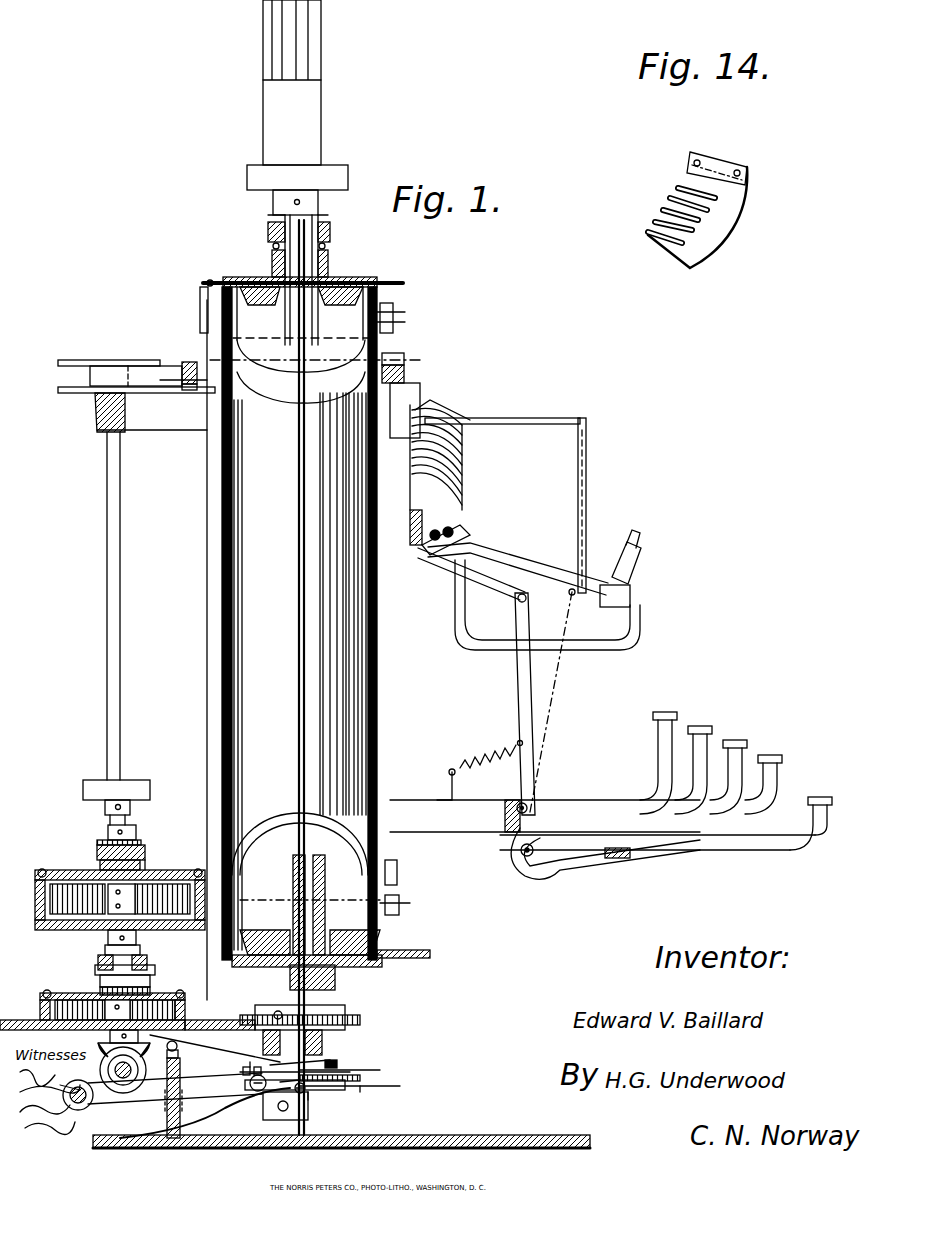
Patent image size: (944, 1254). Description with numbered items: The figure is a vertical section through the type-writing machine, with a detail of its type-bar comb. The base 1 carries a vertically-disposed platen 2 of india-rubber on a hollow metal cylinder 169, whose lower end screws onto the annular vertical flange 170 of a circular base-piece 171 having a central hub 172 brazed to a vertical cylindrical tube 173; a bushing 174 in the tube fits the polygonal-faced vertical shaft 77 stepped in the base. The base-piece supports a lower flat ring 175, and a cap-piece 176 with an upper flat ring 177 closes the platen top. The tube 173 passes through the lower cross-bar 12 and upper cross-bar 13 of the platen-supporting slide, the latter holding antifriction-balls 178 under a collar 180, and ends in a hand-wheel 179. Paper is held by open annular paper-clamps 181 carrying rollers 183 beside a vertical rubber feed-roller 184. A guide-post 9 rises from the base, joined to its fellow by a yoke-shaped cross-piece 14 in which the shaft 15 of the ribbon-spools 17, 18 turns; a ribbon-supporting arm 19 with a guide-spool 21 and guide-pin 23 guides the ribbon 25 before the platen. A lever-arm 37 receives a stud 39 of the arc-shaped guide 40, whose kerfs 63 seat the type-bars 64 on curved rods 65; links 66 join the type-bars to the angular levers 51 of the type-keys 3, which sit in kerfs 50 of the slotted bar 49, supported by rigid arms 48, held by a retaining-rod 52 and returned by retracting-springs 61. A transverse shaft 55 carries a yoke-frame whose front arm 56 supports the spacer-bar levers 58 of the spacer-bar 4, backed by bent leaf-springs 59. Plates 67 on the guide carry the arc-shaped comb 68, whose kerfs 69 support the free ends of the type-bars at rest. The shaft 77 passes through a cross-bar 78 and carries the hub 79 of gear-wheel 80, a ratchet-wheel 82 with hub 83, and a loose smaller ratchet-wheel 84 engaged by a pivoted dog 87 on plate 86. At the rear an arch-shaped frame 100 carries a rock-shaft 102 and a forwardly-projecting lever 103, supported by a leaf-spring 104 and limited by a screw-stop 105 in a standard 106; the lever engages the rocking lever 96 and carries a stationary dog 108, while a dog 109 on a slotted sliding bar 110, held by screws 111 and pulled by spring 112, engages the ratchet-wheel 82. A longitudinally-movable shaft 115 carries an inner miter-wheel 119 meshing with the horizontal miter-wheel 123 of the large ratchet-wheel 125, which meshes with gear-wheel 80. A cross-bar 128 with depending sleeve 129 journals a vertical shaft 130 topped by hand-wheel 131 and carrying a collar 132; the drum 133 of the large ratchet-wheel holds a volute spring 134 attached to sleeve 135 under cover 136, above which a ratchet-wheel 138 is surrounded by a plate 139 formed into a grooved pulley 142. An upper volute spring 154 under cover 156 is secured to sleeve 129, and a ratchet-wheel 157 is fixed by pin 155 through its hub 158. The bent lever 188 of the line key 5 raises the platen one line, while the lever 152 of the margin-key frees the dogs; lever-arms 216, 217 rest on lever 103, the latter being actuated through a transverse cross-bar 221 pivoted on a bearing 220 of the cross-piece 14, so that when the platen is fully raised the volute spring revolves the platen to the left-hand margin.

In FIG. 1, the base 1 is at (435, 1135).
In FIG. 1, the platen 2 is at (299, 623).
In FIG. 1, the type-keys 3 is at (678, 708).
In FIG. 1, the spacer-bar 4 is at (820, 797).
In FIG. 1, the platen-raising or line key 5 is at (630, 583).
In FIG. 1, the guide-post 9 is at (321, 40).
In FIG. 1, the lower cross-bar 12 is at (335, 978).
In FIG. 1, the upper cross-bar 13 is at (270, 260).
In FIG. 1, the yoke-shaped cross-piece 14 is at (136, 405).
In FIG. 1, the ribbon-spool shaft 15 is at (120, 572).
In FIG. 1, the ribbon-spool 17 is at (75, 360).
In FIG. 1, the ribbon-spool 18 is at (82, 1095).
In FIG. 1, the ribbon-supporting arm 19 is at (420, 390).
In FIG. 1, the guide-spool 21 is at (408, 340).
In FIG. 1, the guide-pin 23 is at (405, 360).
In FIG. 1, the ribbon 25 is at (165, 368).
In FIG. 1, the lever-arm 37 is at (396, 518).
In FIG. 1, the stud 39 is at (368, 447).
In FIG. 1, the arc-shaped guide 40 is at (440, 412).
In FIG. 1, the rigid arm 48 is at (545, 816).
In FIG. 1, the slotted bar 49 is at (505, 798).
In FIG. 1, the transverse kerfs 50 is at (445, 775).
In FIG. 1, the angular levers 51 is at (530, 712).
In FIG. 1, the retaining-rod 52 is at (527, 803).
In FIG. 1, the transverse shaft 55 is at (527, 856).
In FIG. 1, the front transverse arm 56 is at (630, 855).
In FIG. 1, the spacer-bar levers 58 is at (735, 842).
In FIG. 1, the bent leaf-springs 59 is at (505, 868).
In FIG. 1, the retracting-springs 61 is at (485, 750).
In FIG. 1, the transverse kerfs 63 is at (465, 468).
In FIG. 1, the type-bars 64 is at (555, 570).
In FIG. 1, the curved rods 65 is at (455, 530).
In FIG. 1, the links 66 is at (485, 580).
In FIG. 1, the forwardly-projecting plates 67 is at (545, 418).
In FIG. 14, the forwardly-projecting plates 67 is at (737, 160).
In FIG. 1, the arc-shaped comb 68 is at (586, 468).
In FIG. 14, the arc-shaped comb 68 is at (718, 215).
In FIG. 14, the kerfs 69 is at (672, 196).
In FIG. 1, the vertical shaft 77 is at (305, 258).
In FIG. 1, the cross-bar 78 is at (275, 1010).
In FIG. 1, the hub 79 is at (330, 1012).
In FIG. 1, the gear-wheel 80 is at (360, 1015).
In FIG. 1, the ratchet-wheel 82 is at (385, 1092).
In FIG. 1, the hub 83 is at (300, 1106).
In FIG. 1, the smaller ratchet-wheel 84 is at (355, 1092).
In FIG. 1, the plate 86 is at (375, 1078).
In FIG. 1, the pivoted dog 87 is at (360, 1079).
In FIG. 1, the rocking lever 96 is at (335, 1060).
In FIG. 1, the arch-shaped frame 100 is at (175, 1101).
In FIG. 1, the rock-shaft 102 is at (90, 1107).
In FIG. 1, the lever 103 is at (181, 1097).
In FIG. 1, the leaf-spring 104 is at (200, 1115).
In FIG. 1, the screw-stop 105 is at (180, 1048).
In FIG. 1, the standard 106 is at (182, 1065).
In FIG. 1, the stationary dog 108 is at (337, 1062).
In FIG. 1, the dog 109 is at (362, 1070).
In FIG. 1, the slotted sliding bar 110 is at (285, 1095).
In FIG. 1, the headed screws 111 is at (255, 1095).
In FIG. 1, the spring 112 is at (290, 1065).
In FIG. 1, the longitudinally-movable shaft 115 is at (126, 1082).
In FIG. 1, the inner miter-wheel 119 is at (190, 1020).
In FIG. 1, the horizontal miter-wheel 123 is at (98, 1045).
In FIG. 1, the large ratchet-wheel 125 is at (240, 1040).
In FIG. 1, the cross-bar 128 is at (97, 850).
In FIG. 1, the sleeve 129 is at (110, 880).
In FIG. 1, the vertical shaft 130 is at (108, 934).
In FIG. 1, the hand-wheel 131 is at (116, 797).
In FIG. 1, the collar 132 is at (105, 948).
In FIG. 1, the drum 133 is at (185, 1000).
In FIG. 1, the volute spring 134 is at (82, 1009).
In FIG. 1, the sleeve 135 is at (170, 992).
In FIG. 1, the cover 136 is at (62, 985).
In FIG. 1, the ratchet-wheel 138 is at (100, 978).
In FIG. 1, the plate 139 is at (150, 975).
In FIG. 1, the grooved pulley 142 is at (147, 955).
In FIG. 1, the lever 152 is at (45, 897).
In FIG. 1, the volute spring 154 is at (149, 899).
In FIG. 1, the pin 155 is at (136, 832).
In FIG. 1, the cover 156 is at (160, 880).
In FIG. 1, the ratchet-wheel 157 is at (97, 843).
In FIG. 1, the hub 158 is at (135, 825).
In FIG. 1, the hollow metal cylinder 169 is at (315, 370).
In FIG. 1, the annular vertical flange 170 is at (265, 942).
In FIG. 1, the circular base-piece 171 is at (380, 967).
In FIG. 1, the central hub 172 is at (355, 942).
In FIG. 1, the vertical cylindrical tube 173 is at (310, 840).
In FIG. 1, the bushing 174 is at (293, 905).
In FIG. 1, the flat ring 175 is at (405, 943).
In FIG. 1, the cap-piece 176 is at (348, 280).
In FIG. 1, the flat ring 177 is at (318, 283).
In FIG. 1, the antifriction-balls 178 is at (268, 238).
In FIG. 1, the hand-wheel 179 is at (297, 190).
In FIG. 1, the collar 180 is at (268, 222).
In FIG. 1, the paper-clamps 181 is at (208, 320).
In FIG. 1, the rollers 183 is at (405, 318).
In FIG. 1, the vertical rubber roller 184 is at (215, 580).
In FIG. 1, the bent lever 188 is at (547, 617).
In FIG. 1, the inner lever-arm 216 is at (243, 1072).
In FIG. 1, the inner lever-arm 217 is at (262, 1057).
In FIG. 1, the bearing 220 is at (192, 360).
In FIG. 1, the transverse cross-bar 221 is at (190, 393).